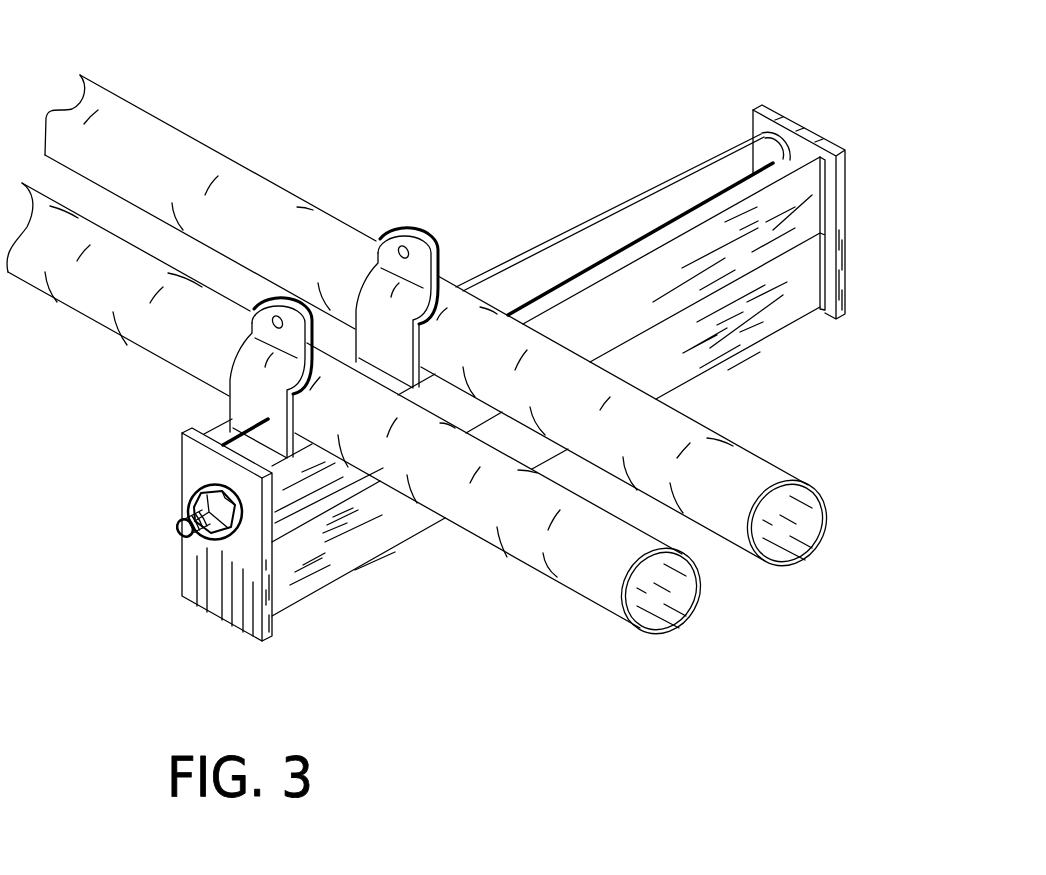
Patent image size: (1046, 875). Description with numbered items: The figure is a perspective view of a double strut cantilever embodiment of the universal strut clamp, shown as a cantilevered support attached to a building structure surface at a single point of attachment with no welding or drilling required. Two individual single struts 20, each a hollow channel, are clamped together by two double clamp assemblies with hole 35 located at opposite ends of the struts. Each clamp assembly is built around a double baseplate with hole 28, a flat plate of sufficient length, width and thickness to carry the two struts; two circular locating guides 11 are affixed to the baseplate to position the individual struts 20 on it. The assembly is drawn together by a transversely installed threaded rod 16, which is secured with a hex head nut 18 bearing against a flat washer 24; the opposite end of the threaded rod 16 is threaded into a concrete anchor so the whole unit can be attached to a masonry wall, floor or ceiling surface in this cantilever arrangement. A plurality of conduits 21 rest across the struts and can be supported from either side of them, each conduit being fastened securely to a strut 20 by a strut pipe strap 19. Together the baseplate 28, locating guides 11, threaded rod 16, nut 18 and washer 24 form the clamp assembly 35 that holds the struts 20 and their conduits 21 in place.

The locating guide 11 is at (760, 150).
The threaded rod 16 is at (673, 218).
The hex head nut 18 is at (192, 502).
The strut pipe strap 19 is at (322, 243).
The single strut 20 is at (605, 218).
The conduit 21 is at (728, 467).
The flat washer 24 is at (203, 483).
The double baseplate with hole 28 is at (763, 108).
The double clamp assembly with hole 35 is at (858, 203).